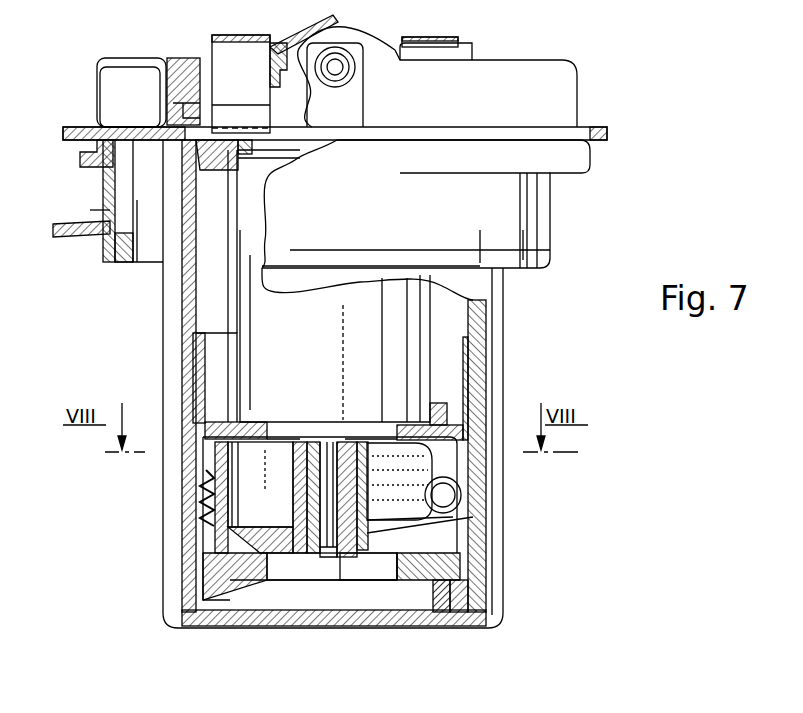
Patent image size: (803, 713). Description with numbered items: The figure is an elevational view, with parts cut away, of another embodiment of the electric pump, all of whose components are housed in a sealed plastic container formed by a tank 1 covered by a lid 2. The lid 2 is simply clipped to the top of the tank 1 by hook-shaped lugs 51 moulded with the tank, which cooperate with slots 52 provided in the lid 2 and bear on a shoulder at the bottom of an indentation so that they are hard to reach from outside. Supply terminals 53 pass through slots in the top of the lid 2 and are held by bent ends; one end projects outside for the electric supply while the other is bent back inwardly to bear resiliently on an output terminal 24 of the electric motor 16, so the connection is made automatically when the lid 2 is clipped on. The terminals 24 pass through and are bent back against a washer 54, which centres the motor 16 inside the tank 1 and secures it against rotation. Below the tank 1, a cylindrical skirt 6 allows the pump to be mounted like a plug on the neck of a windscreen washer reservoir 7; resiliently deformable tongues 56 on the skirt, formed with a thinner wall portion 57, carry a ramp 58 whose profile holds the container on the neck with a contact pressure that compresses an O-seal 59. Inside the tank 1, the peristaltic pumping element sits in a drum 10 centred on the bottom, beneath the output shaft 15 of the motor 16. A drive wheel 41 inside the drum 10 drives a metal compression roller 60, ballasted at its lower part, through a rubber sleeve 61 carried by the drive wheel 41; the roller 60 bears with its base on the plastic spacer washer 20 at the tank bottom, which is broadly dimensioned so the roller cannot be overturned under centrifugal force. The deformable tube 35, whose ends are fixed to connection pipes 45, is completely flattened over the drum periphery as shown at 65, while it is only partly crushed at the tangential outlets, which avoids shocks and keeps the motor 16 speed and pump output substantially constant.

The tank 1 is at (490, 316).
The lid 2 is at (540, 105).
The cylindrical skirt 6 is at (507, 229).
The windscreen washer reservoir 7 is at (73, 238).
The drum 10 is at (483, 402).
The output shaft 15 is at (325, 545).
The electric motor 16 is at (342, 356).
The spacer washer 20 is at (441, 603).
The output terminal 24 is at (245, 152).
The deformable tube 35 is at (430, 520).
The drive wheel 41 is at (332, 550).
The connection pipe 45 is at (338, 70).
The lug 51 is at (128, 98).
The slot 52 is at (147, 65).
The supply terminal 53 is at (456, 41).
The washer 54 is at (213, 172).
The tongue 56 is at (123, 250).
The sleeve 57 is at (108, 180).
The ramp 58 is at (92, 213).
The O-seal 59 is at (97, 146).
The compression roller 60 is at (195, 543).
The rubber sleeve 61 is at (344, 548).
The completely flattened tube region 65 is at (193, 496).